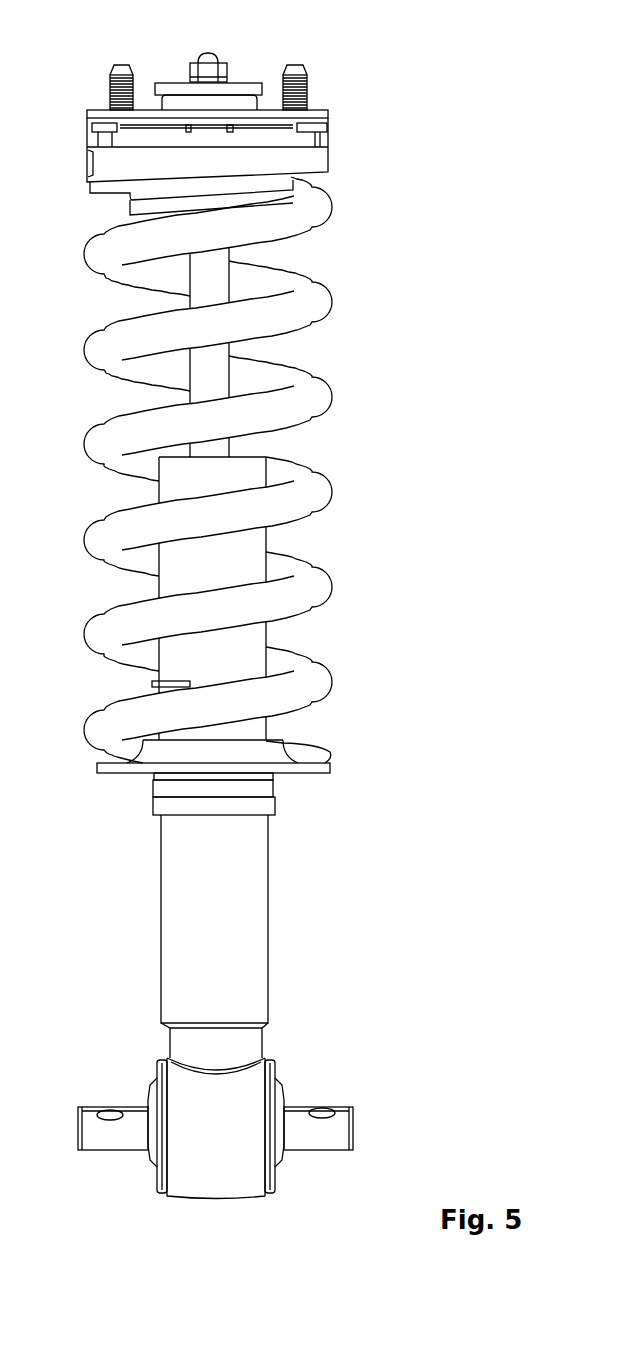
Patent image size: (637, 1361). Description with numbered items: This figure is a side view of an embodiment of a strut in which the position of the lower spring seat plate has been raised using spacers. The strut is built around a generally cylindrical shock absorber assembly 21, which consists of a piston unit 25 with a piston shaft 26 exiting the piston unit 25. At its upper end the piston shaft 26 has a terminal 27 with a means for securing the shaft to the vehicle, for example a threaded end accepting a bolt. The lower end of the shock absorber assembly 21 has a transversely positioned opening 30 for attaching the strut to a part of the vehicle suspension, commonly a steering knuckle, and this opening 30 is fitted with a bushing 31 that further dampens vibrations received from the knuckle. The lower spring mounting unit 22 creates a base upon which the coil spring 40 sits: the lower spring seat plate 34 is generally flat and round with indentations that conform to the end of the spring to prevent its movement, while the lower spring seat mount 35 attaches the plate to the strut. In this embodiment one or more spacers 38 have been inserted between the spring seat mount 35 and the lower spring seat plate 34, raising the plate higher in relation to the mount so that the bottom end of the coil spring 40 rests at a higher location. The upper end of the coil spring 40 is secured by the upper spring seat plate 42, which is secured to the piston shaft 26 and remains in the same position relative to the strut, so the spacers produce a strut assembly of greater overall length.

The shock absorber assembly 21 is at (167, 662).
The lower spring mounting unit 22 is at (267, 730).
The piston unit 25 is at (242, 557).
The piston shaft 26 is at (213, 370).
The terminal 27 is at (213, 62).
The transversely positioned opening 30 is at (187, 1098).
The bushing 31 is at (282, 1163).
The lower spring seat plate 34 is at (322, 767).
The lower spring seat mount 35 is at (265, 805).
The spacers 38 is at (265, 788).
The coil spring 40 is at (320, 310).
The upper spring seat plate 42 is at (313, 157).